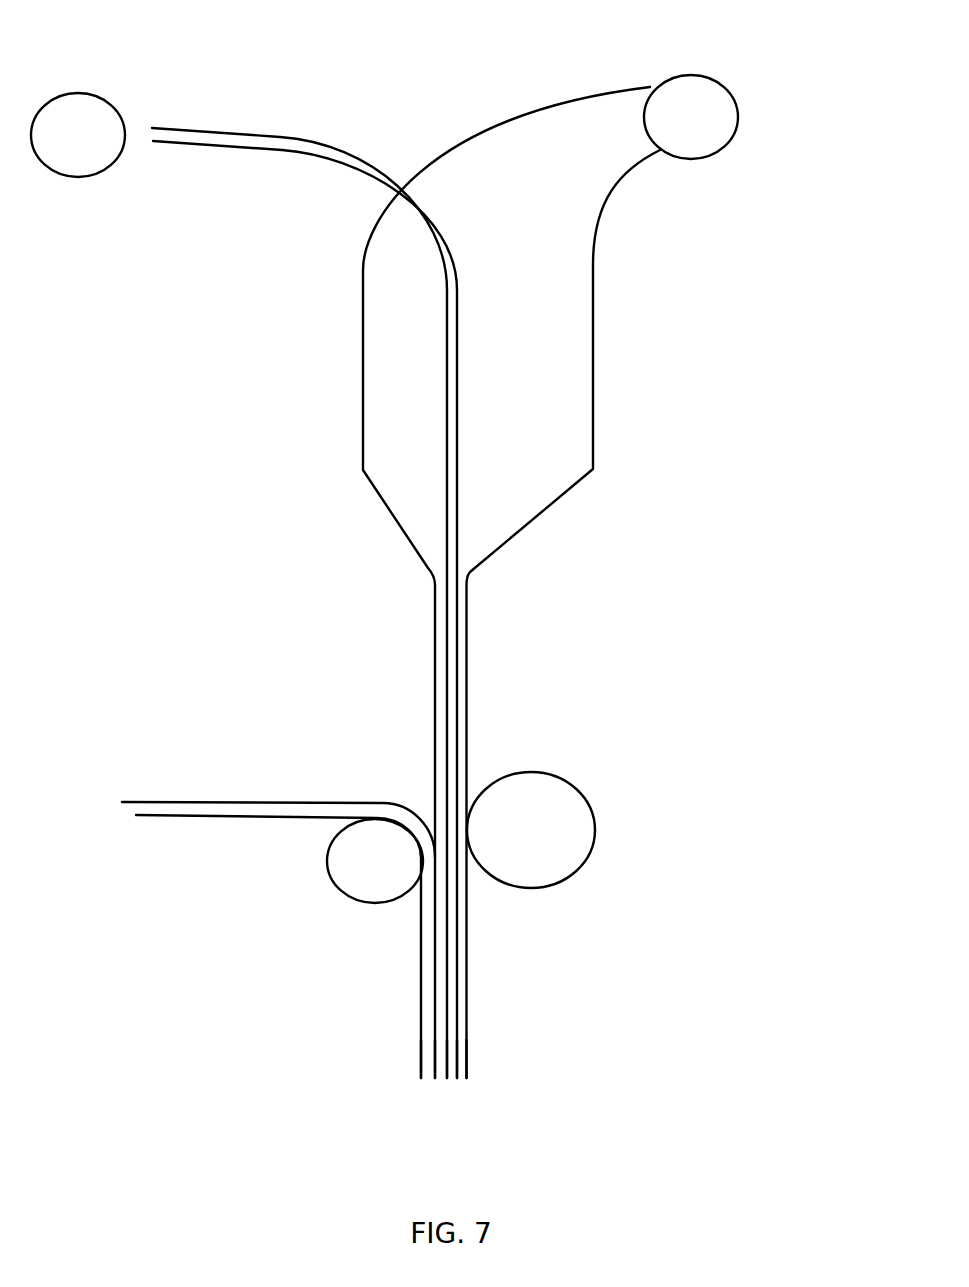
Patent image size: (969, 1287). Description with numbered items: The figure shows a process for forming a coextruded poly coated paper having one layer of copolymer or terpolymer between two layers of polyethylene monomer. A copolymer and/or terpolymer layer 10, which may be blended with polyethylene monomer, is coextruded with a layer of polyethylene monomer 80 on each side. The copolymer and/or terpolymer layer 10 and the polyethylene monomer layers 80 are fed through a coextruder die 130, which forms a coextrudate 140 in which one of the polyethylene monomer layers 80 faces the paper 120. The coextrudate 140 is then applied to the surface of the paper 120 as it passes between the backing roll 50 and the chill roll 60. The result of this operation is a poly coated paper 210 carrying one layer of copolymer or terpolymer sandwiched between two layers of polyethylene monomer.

The copolymer and/or terpolymer layer 10 is at (728, 73).
The polyethylene monomer layer 80 is at (108, 85).
The backing roll 50 is at (330, 877).
The chill roll 60 is at (585, 802).
The coextruder die 130 is at (578, 348).
The coextrudate 140 is at (452, 644).
The paper 120 is at (137, 808).
The poly coated paper 210 is at (439, 1083).